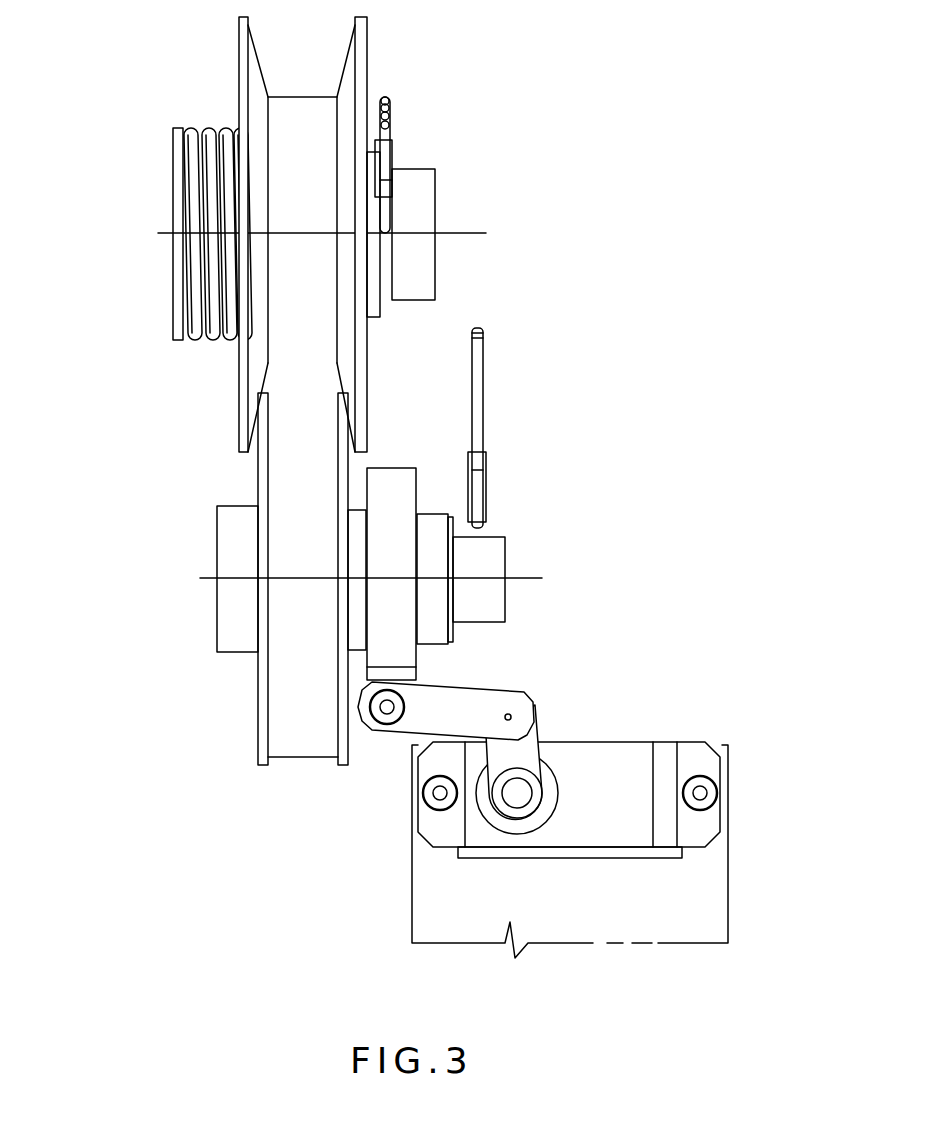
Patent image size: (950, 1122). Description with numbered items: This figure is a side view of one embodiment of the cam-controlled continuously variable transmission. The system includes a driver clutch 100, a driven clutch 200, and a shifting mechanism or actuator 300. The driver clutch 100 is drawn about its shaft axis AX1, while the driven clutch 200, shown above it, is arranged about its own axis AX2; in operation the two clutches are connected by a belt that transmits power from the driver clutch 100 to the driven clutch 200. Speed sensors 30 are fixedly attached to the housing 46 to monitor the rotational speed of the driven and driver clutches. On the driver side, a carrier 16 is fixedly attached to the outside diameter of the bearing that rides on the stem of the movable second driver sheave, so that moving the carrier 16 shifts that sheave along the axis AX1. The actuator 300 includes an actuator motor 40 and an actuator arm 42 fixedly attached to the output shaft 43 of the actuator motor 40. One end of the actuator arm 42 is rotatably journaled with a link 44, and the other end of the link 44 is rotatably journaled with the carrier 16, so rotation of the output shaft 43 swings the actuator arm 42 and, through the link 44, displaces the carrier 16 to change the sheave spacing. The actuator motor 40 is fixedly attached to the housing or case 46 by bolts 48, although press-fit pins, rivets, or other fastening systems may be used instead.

The driver clutch 100 is at (195, 647).
The driven clutch 200 is at (142, 173).
The actuator 300 is at (583, 768).
The carrier 16 is at (387, 468).
The speed sensors 30 is at (390, 148).
The actuator motor 40 is at (665, 827).
The actuator arm 42 is at (540, 748).
The output shaft 43 is at (542, 777).
The link 44 is at (477, 680).
The housing 46 is at (412, 897).
The bolts 48 is at (422, 793).
The shaft axis AX1 is at (528, 577).
The axis AX2 is at (463, 233).